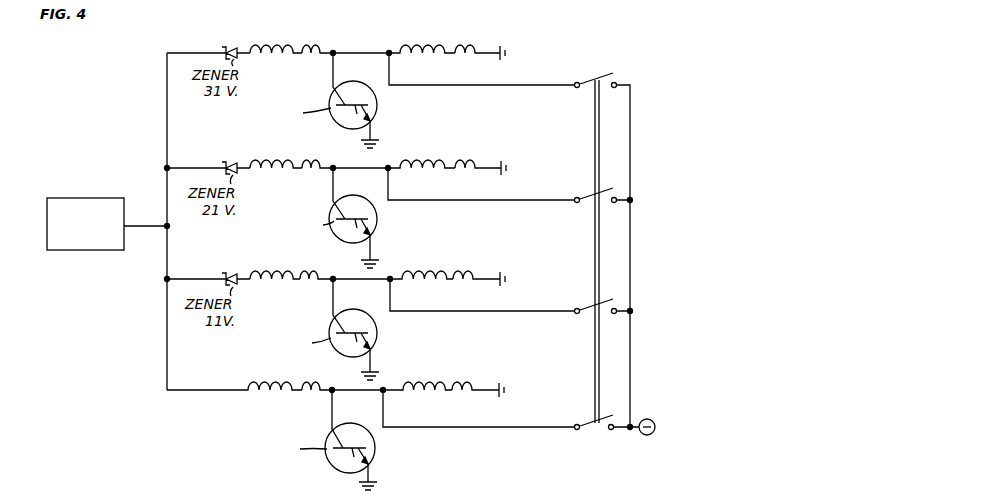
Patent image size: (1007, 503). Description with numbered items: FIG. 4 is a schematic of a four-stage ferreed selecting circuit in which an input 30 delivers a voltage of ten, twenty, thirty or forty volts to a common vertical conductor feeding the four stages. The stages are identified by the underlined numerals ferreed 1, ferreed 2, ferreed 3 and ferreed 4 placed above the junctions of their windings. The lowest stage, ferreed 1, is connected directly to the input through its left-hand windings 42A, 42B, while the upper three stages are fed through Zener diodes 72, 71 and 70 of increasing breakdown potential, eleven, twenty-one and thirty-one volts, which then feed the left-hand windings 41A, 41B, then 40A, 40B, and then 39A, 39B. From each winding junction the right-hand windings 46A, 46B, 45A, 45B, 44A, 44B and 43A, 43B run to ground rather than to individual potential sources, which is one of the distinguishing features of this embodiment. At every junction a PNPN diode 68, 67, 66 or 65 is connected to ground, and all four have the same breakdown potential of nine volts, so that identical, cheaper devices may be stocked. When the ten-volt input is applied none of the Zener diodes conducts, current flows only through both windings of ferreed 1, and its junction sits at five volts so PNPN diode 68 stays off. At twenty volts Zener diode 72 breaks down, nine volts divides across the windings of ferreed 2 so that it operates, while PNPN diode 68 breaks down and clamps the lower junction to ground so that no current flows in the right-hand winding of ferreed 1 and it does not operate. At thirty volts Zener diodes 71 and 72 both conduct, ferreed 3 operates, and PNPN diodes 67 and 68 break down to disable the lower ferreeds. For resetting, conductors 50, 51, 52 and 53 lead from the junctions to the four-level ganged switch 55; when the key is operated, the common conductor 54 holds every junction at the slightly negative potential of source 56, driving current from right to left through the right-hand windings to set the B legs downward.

The input 30 is at (82, 197).
The Zener diode 70 is at (233, 47).
The Zener diode 71 is at (236, 162).
The Zener diode 72 is at (232, 273).
The winding 39A is at (276, 41).
The winding 39B is at (316, 41).
The winding 40A is at (276, 157).
The winding 40B is at (316, 157).
The winding 41A is at (275, 268).
The winding 41B is at (316, 268).
The winding 42A is at (234, 379).
The winding 42B is at (316, 379).
The winding 43A is at (480, 45).
The winding 43B is at (422, 41).
The winding 44A is at (480, 160).
The winding 44B is at (421, 157).
The winding 45A is at (479, 271).
The winding 45B is at (421, 268).
The winding 46A is at (478, 382).
The winding 46B is at (417, 379).
The ferreed 1 is at (356, 388).
The ferreed 2 is at (357, 276).
The ferreed 3 is at (362, 165).
The ferreed 4 is at (366, 47).
The PNPN diode 65 is at (378, 108).
The PNPN diode 66 is at (378, 220).
The PNPN diode 67 is at (378, 338).
The PNPN diode 68 is at (375, 454).
The conductor 50 is at (484, 88).
The conductor 51 is at (507, 201).
The conductor 52 is at (492, 312).
The conductor 53 is at (478, 428).
The common conductor 54 is at (631, 264).
The four-level ganged switch 55 is at (594, 266).
The source 56 is at (650, 436).